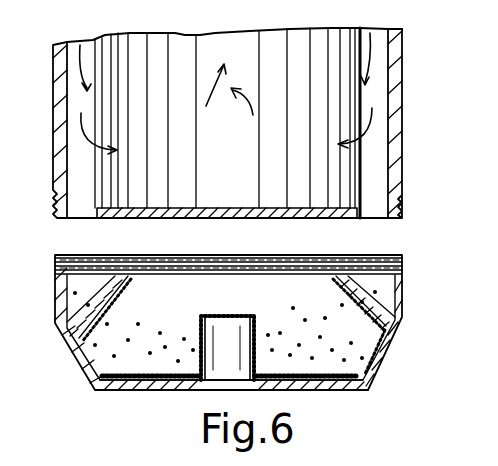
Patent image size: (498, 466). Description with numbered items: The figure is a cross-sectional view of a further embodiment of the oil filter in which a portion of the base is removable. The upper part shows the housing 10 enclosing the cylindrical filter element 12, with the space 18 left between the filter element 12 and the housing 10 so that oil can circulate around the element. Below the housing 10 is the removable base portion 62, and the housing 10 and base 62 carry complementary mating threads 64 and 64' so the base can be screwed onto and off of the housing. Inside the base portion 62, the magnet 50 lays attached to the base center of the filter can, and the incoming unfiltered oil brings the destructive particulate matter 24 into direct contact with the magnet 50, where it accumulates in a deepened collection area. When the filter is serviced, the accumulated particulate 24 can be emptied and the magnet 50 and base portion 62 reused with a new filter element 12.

The housing 10 is at (397, 52).
The filter element 12 is at (317, 37).
The space 18 is at (90, 183).
The mating thread 64 is at (265, 203).
The mating thread 64' is at (248, 249).
The base portion 62 is at (418, 260).
The magnet 50 is at (222, 372).
The particulate matter 24 is at (338, 348).